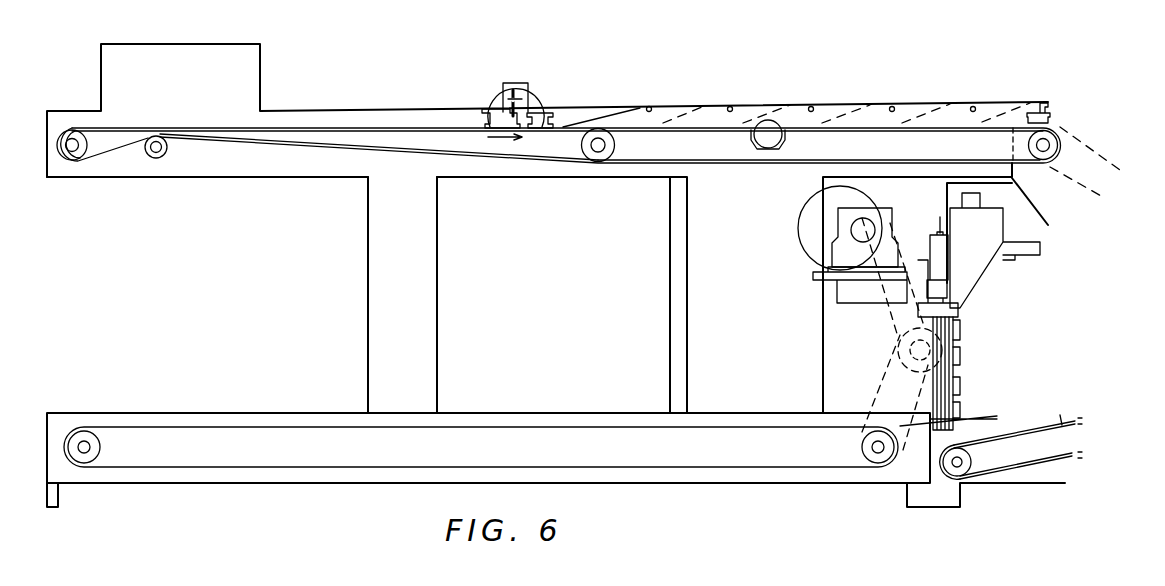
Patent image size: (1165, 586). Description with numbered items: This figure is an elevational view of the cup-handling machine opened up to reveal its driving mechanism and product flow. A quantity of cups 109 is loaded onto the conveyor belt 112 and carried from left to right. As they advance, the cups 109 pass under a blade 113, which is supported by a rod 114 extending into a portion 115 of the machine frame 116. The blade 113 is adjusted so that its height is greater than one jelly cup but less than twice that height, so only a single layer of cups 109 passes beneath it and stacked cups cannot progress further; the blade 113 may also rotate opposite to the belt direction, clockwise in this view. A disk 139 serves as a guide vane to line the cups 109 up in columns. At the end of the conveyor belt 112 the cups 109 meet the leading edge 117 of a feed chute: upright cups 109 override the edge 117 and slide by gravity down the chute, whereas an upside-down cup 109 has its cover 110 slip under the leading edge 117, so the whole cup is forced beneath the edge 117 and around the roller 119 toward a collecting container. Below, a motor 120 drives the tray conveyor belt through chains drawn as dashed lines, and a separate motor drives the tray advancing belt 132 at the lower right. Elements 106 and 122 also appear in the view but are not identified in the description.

The stack of containers / dispenser 106 is at (958, 330).
The cups 109 is at (490, 100).
The cover 110 is at (1040, 103).
The conveyor belt 112 is at (406, 126).
The blade 113 is at (518, 96).
The rod 114 is at (532, 99).
The portion of the machine frame 115 is at (503, 90).
The machine frame 116 is at (368, 257).
The leading edge 117 is at (1062, 129).
The roller 119 is at (1056, 150).
The motor 120 is at (810, 233).
The hopper 122 is at (995, 272).
The tray advancing belt 132 is at (1016, 428).
The disk 139 is at (540, 54).